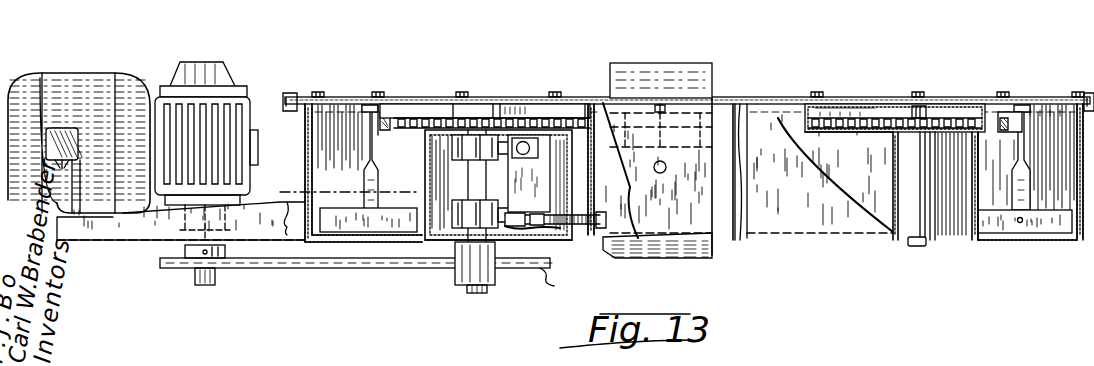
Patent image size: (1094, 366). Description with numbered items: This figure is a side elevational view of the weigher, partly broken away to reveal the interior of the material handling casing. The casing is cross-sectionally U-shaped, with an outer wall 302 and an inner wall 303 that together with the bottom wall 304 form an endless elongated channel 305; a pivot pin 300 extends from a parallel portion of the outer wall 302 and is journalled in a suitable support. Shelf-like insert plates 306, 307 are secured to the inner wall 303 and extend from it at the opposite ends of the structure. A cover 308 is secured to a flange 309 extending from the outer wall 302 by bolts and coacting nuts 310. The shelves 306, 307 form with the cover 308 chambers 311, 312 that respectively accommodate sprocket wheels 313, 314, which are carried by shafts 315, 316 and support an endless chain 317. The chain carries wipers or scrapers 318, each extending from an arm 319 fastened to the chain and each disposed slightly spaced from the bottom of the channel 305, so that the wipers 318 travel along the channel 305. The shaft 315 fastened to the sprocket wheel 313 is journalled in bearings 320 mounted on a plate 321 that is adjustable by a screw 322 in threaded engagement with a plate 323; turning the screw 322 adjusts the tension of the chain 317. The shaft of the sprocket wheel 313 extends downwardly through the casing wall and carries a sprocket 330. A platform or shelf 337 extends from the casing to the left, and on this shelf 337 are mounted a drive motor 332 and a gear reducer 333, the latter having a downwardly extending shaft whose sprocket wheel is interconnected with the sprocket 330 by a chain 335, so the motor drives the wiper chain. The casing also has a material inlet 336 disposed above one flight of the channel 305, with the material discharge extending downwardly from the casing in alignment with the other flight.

The pivot pin 300 is at (668, 161).
The outer wall 302 is at (305, 152).
The inner wall 303 is at (426, 158).
The bottom wall 304 is at (432, 245).
The endless elongated channel 305 is at (340, 108).
The shelf-like insert plate 306 is at (862, 133).
The shelf-like insert plate 307 is at (573, 136).
The cover 308 is at (758, 102).
The flange 309 is at (836, 104).
The bolts and coacting nuts 310 is at (318, 92).
The chamber 311 is at (514, 108).
The chamber 312 is at (862, 110).
The sprocket wheel 313 is at (391, 116).
The sprocket wheel 314 is at (992, 118).
The shaft 315 is at (482, 290).
The shaft 316 is at (920, 242).
The endless chain 317 is at (771, 133).
The wiper 318 is at (341, 207).
The arm 319 is at (368, 160).
The bearing 320 is at (463, 170).
The plate 321 is at (527, 188).
The screw 322 is at (562, 212).
The plate 323 is at (562, 190).
The sprocket 330 is at (552, 272).
The drive motor 332 is at (68, 73).
The gear reducer 333 is at (226, 78).
The chain 335 is at (305, 270).
The material inlet 336 is at (683, 65).
The base 337 is at (118, 238).